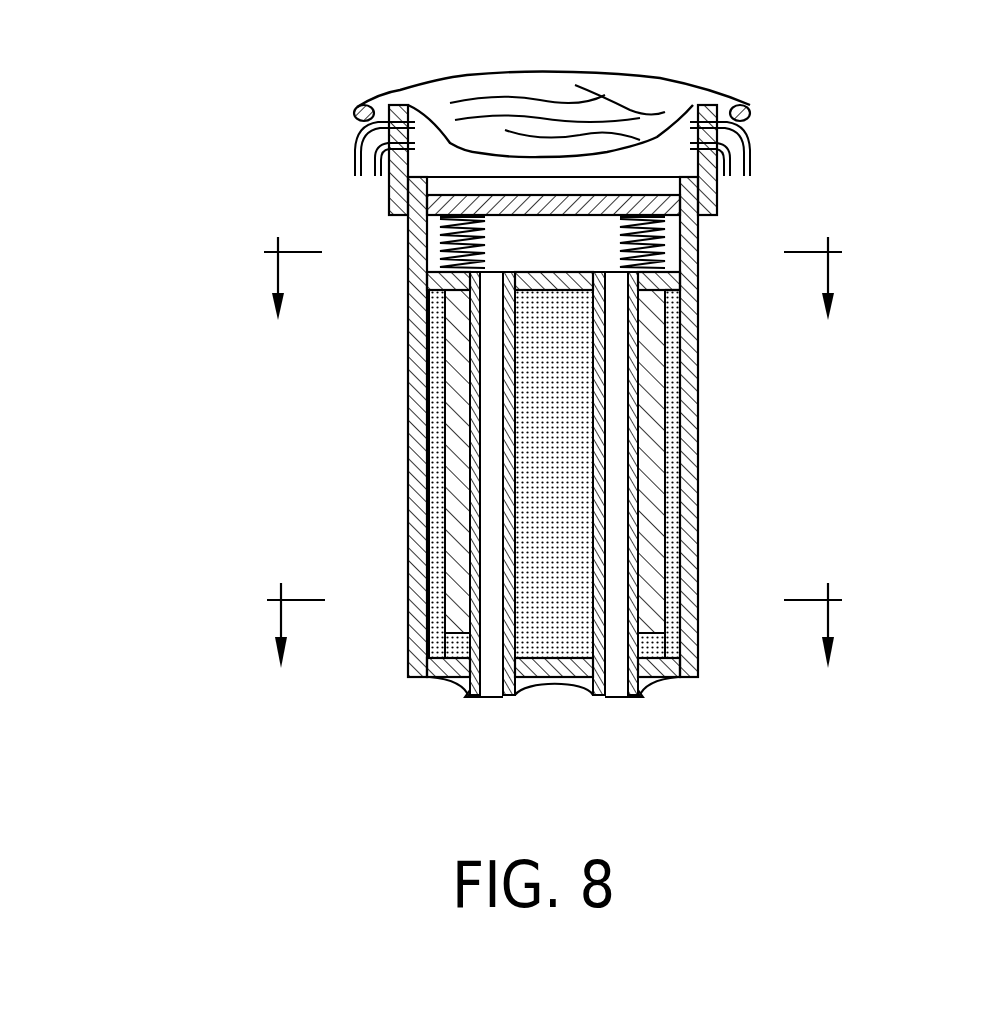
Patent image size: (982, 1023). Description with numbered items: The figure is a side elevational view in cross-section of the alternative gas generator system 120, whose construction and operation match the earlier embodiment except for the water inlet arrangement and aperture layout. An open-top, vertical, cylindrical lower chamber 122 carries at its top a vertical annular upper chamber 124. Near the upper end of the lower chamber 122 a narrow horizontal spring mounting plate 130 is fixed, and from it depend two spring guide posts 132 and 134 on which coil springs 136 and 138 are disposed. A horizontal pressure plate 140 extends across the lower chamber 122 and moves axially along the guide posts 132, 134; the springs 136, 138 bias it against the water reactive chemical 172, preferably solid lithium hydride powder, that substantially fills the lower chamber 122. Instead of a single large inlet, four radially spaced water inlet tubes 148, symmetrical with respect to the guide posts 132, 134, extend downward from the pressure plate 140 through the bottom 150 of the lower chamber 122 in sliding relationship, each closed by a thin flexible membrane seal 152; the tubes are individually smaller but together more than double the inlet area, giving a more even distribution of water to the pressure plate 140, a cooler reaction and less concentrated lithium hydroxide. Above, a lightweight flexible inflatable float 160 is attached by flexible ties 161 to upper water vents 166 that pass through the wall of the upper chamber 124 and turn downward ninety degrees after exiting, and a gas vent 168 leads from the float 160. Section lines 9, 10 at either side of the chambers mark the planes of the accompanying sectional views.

The gas generator system 120 is at (232, 430).
The lower chamber 122 is at (412, 480).
The upper chamber 124 is at (393, 198).
The spring mounting plate 130 is at (575, 207).
The spring guide post 132 is at (462, 398).
The spring guide post 134 is at (652, 470).
The coil spring 136 is at (443, 238).
The coil spring 138 is at (655, 252).
The pressure plate 140 is at (672, 280).
The water inlet tube 148 is at (478, 697).
The bottom 150 is at (432, 668).
The seal 152 is at (520, 685).
The inflatable float 160 is at (572, 78).
The flexible tie 161 is at (372, 106).
The upper water vent 166 is at (755, 150).
The gas vent 168 is at (332, 130).
The water reactive chemical 172 is at (530, 590).
The section line 9- 9 is at (554, 649).
The section line 10- 10 is at (552, 301).